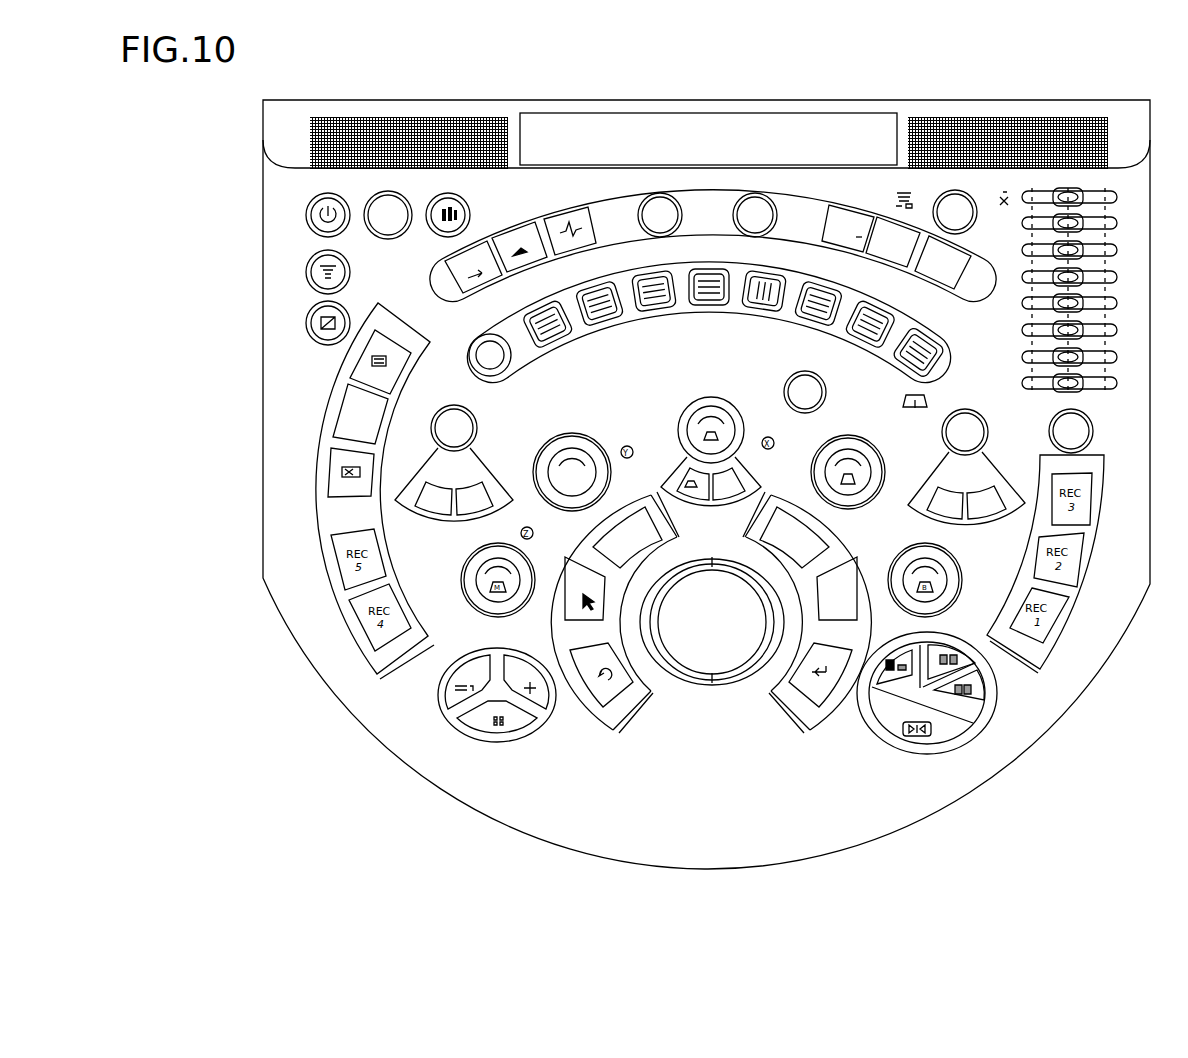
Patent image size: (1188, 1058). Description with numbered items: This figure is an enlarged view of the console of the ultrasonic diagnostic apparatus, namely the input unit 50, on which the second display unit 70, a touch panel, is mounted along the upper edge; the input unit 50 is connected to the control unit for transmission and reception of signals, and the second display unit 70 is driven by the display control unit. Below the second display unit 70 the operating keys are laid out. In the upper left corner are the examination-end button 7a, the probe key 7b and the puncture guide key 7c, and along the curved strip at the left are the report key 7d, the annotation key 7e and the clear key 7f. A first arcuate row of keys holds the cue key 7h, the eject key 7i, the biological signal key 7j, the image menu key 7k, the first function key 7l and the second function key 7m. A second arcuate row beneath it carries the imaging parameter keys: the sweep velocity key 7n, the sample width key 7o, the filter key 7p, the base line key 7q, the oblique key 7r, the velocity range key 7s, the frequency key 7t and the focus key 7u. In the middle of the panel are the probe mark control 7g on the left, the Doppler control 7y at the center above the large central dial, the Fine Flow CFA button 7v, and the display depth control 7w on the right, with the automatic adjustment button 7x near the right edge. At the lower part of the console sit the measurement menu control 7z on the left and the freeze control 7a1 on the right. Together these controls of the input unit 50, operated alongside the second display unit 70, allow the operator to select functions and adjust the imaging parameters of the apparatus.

The input unit 50 is at (1052, 697).
The second display unit 70 is at (775, 112).
The examination-end button 7a is at (388, 239).
The probe 7b is at (306, 273).
The puncture guide 7c is at (306, 326).
The report 7d is at (352, 352).
The annotation 7e is at (336, 408).
The clear 7f is at (329, 470).
The probe mark 7g is at (431, 470).
The cue 7h is at (473, 256).
The eject 7i is at (516, 238).
The biological signal 7j is at (565, 221).
The image menu 7k is at (836, 243).
The function 1 7l is at (893, 256).
The function 2 7m is at (933, 273).
The sweep velocity 7n is at (536, 314).
The sample width 7o is at (592, 288).
The filter 7p is at (651, 275).
The base line 7q is at (707, 269).
The oblique 7r is at (761, 274).
The velocity range 7s is at (834, 288).
The frequency 7t is at (856, 346).
The focus 7u is at (942, 352).
The Fine Flow CFA 7v is at (784, 392).
The display depth 7w is at (937, 466).
The automatic adjustment 7x is at (1049, 430).
The Doppler 7y is at (678, 414).
The measurement menu 7z is at (519, 742).
The freeze 7a1 is at (887, 743).